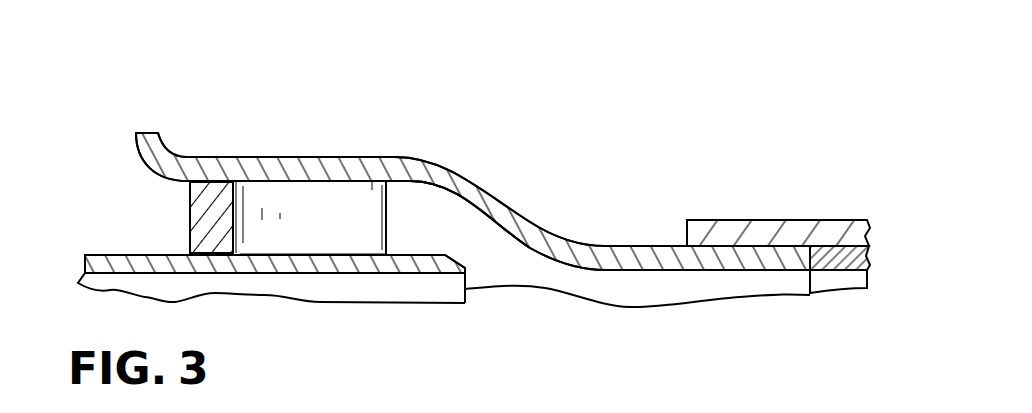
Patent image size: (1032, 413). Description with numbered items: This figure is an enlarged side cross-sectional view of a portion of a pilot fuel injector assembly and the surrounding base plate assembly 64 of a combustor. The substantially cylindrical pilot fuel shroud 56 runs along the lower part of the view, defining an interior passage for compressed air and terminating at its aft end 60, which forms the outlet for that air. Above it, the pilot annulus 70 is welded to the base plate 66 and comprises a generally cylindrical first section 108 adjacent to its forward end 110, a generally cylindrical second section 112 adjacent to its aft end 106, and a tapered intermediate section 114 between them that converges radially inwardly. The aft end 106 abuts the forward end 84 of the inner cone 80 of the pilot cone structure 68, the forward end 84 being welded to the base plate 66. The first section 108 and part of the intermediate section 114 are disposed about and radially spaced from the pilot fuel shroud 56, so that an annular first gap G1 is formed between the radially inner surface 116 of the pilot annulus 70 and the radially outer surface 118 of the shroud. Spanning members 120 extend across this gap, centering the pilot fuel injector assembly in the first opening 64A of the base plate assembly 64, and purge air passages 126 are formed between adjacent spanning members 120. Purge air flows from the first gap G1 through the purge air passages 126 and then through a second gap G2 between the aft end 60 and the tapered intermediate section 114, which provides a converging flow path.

The pilot fuel shroud 56 is at (290, 272).
The aft end 60 is at (466, 265).
The base plate assembly 64 is at (691, 245).
The first opening 64A is at (417, 187).
The base plate 66 is at (725, 227).
The pilot cone structure 68 is at (848, 278).
The pilot annulus 70 is at (431, 157).
The inner cone 80 is at (858, 257).
The forward end 84 is at (807, 257).
The aft end 106 is at (840, 245).
The first section 108 is at (362, 161).
The forward end 110 is at (136, 139).
The second section 112 is at (657, 265).
The intermediate section 114 is at (520, 212).
The radially inner surface 116 is at (277, 183).
The radially outer surface 118 is at (312, 254).
The spanning members 120 is at (327, 188).
The purge air passages 126 is at (272, 230).
The first gap G1 is at (142, 214).
The second gap G2 is at (486, 256).